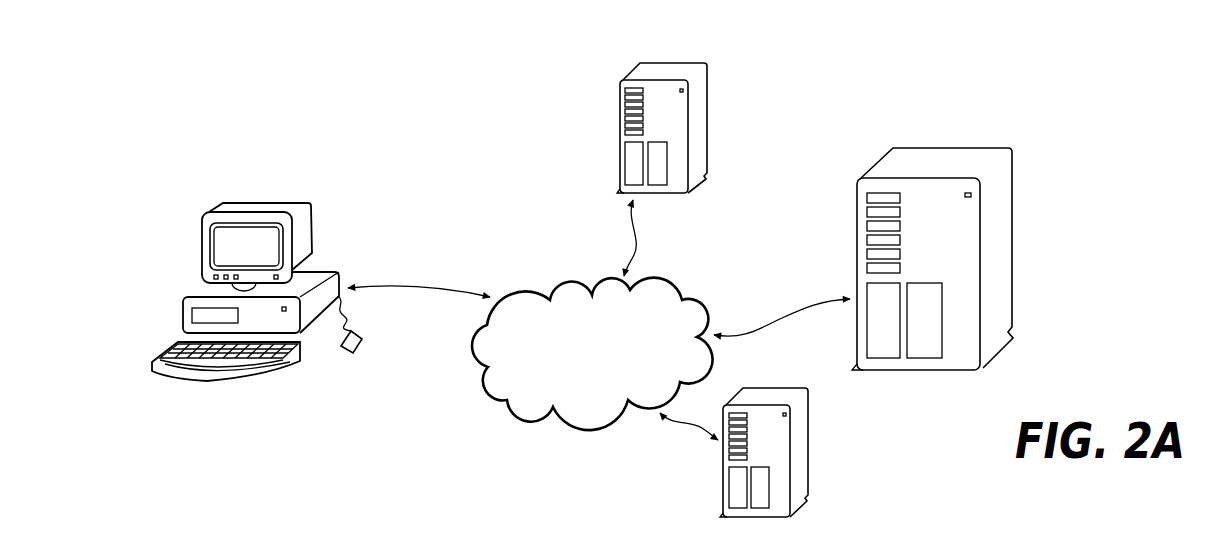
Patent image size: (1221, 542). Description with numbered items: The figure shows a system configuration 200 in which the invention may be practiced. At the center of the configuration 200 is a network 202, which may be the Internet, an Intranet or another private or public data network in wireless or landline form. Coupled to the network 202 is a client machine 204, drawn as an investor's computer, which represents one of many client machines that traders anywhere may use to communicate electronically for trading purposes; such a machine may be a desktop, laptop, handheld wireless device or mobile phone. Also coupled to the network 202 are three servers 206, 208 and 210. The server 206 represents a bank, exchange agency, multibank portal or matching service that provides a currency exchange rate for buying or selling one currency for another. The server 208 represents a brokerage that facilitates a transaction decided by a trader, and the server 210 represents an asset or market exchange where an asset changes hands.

The system configuration 200 is at (646, 274).
The network 202 is at (653, 297).
The client machine 204 is at (333, 270).
The server 206 is at (660, 67).
The server 208 is at (932, 153).
The server 210 is at (765, 390).